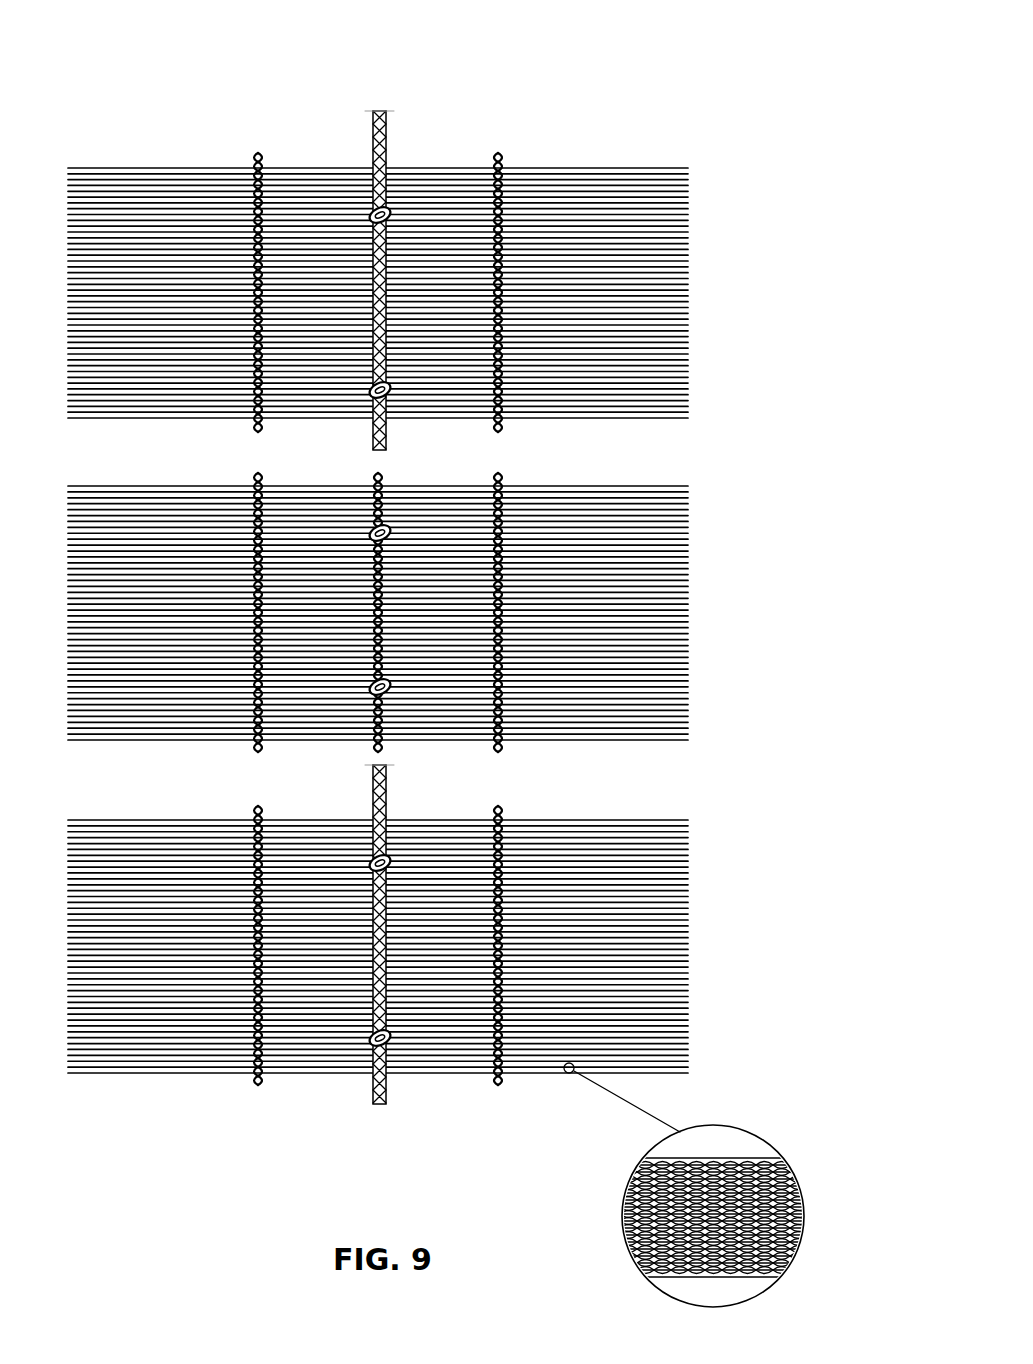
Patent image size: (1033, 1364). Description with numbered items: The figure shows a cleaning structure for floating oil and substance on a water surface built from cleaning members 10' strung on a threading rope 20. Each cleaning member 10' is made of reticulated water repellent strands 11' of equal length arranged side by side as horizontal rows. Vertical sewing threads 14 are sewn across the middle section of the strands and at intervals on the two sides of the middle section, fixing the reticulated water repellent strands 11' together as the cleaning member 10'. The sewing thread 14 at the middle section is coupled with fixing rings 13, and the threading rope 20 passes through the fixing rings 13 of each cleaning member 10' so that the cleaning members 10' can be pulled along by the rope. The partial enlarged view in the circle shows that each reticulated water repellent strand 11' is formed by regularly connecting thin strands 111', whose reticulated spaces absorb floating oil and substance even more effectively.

The cleaning member 10' is at (454, 587).
The reticulated water repellent strand 11' is at (454, 613).
The thin strand 111' is at (666, 1217).
The fixing ring 13 is at (360, 200).
The sewing thread 14 is at (250, 157).
The threading rope 20 is at (378, 140).